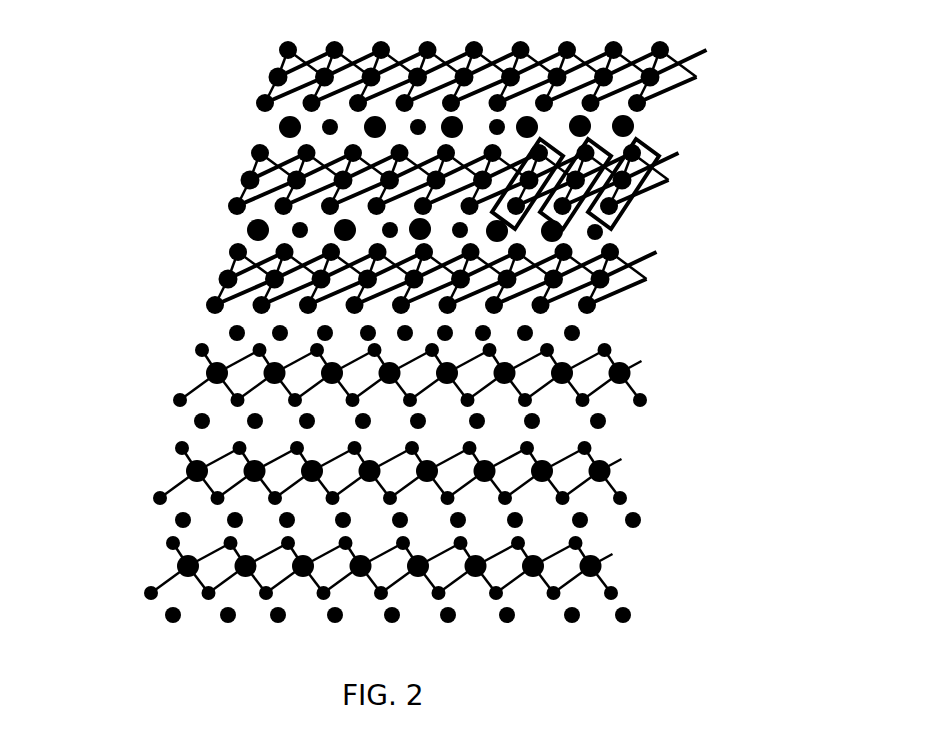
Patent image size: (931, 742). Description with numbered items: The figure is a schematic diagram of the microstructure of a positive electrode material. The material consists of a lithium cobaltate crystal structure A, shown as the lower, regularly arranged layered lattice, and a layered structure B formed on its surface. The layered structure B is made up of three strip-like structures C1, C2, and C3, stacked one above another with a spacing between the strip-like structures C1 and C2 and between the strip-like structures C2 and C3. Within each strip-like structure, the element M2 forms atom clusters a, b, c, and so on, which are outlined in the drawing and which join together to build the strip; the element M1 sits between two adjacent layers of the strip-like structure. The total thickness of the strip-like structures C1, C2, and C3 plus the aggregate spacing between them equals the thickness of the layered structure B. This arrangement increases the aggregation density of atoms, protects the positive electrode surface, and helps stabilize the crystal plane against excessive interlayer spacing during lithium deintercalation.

The lithium cobaltate crystal structure A is at (138, 328).
The layered structure B is at (138, 38).
The strip-like structure C1 is at (220, 43).
The strip-like structure C2 is at (212, 150).
The strip-like structure C3 is at (190, 248).
The atom cluster a is at (540, 139).
The atom cluster b is at (588, 139).
The atom cluster c is at (659, 156).